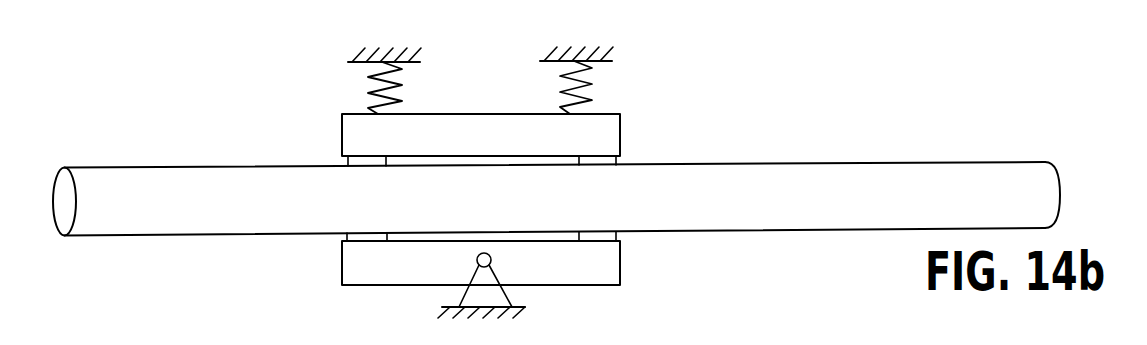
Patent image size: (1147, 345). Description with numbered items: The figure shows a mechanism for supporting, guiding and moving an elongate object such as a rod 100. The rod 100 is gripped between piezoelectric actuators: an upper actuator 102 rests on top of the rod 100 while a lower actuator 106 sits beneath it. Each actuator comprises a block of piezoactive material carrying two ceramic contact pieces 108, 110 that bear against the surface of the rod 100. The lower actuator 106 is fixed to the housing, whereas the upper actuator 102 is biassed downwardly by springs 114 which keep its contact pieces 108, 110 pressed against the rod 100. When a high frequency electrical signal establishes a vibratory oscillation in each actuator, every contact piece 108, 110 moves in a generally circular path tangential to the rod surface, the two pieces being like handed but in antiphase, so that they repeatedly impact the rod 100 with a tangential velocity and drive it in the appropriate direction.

The rod 100 is at (818, 230).
The upper piezoelectric actuator 102 is at (622, 122).
The lower piezoelectric actuator 106 is at (621, 255).
The ceramic contact piece 108 is at (618, 158).
The ceramic contact piece 110 is at (347, 163).
The springs 114 is at (585, 73).